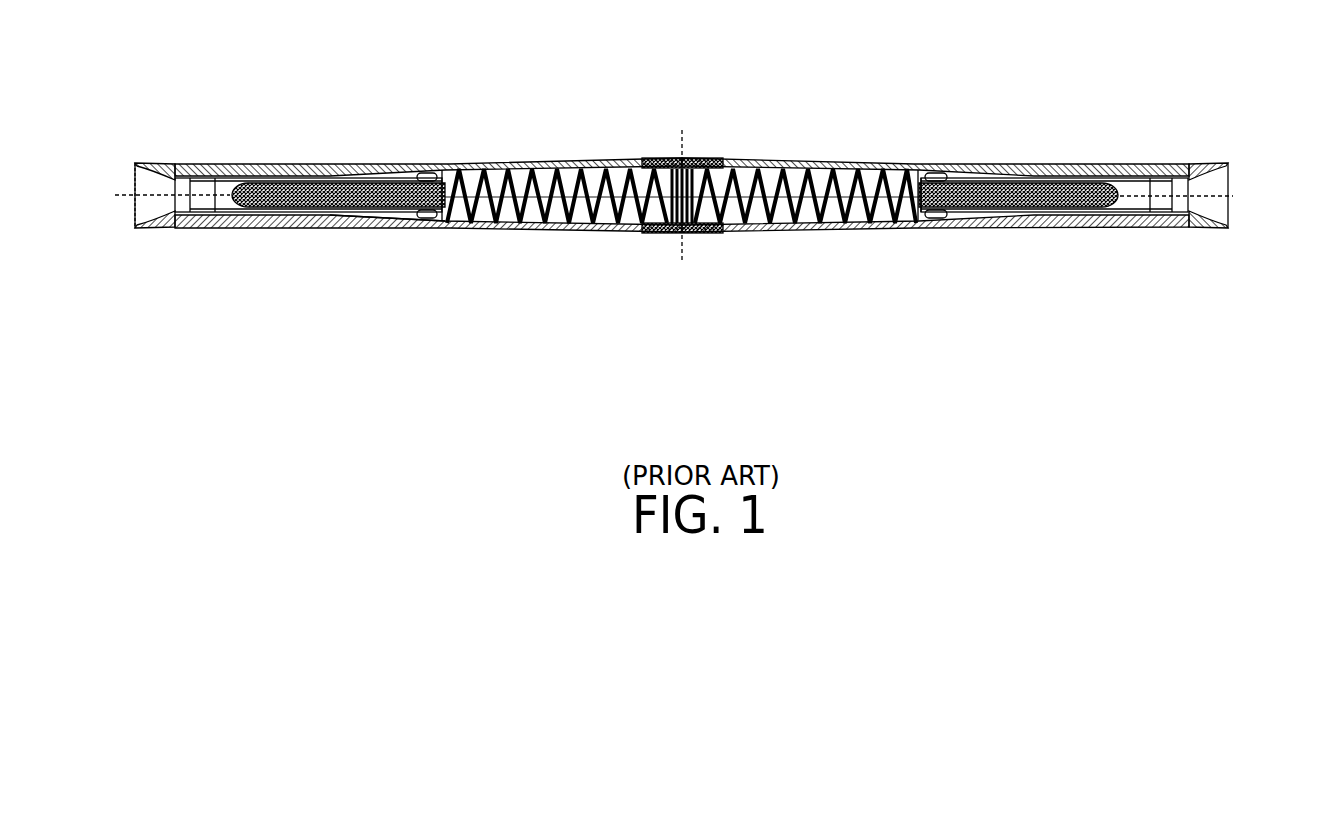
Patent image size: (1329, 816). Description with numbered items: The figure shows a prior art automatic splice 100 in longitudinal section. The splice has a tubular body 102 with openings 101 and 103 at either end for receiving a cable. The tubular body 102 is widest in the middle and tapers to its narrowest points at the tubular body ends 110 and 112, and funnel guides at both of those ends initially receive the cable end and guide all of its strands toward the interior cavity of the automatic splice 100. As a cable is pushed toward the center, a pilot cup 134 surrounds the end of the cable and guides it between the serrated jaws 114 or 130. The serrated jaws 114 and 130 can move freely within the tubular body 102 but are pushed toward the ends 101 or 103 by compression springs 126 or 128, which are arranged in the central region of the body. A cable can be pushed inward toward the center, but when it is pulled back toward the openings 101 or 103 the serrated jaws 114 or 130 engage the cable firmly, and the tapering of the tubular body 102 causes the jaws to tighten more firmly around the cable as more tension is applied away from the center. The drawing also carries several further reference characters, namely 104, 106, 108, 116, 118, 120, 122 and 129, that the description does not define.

The automatic splice 100 is at (452, 365).
The opening 101 is at (1233, 168).
The tubular body 102 is at (948, 170).
The opening 103 is at (133, 168).
The central bore 104 is at (118, 198).
The first housing portion 106 is at (330, 166).
The second housing portion 108 is at (1090, 166).
The tubular body end 110 is at (178, 214).
The tubular body end 112 is at (1185, 226).
The serrated jaws 114 is at (415, 173).
The inner sleeve 116 is at (390, 220).
The first rod 118 is at (280, 185).
The central coupling 120 is at (705, 160).
The central wall 122 is at (740, 224).
The compression spring 126 is at (557, 172).
The compression spring 128 is at (810, 168).
The center plane 129 is at (682, 130).
The serrated jaws 130 is at (1016, 183).
The pilot cup 134 is at (222, 178).